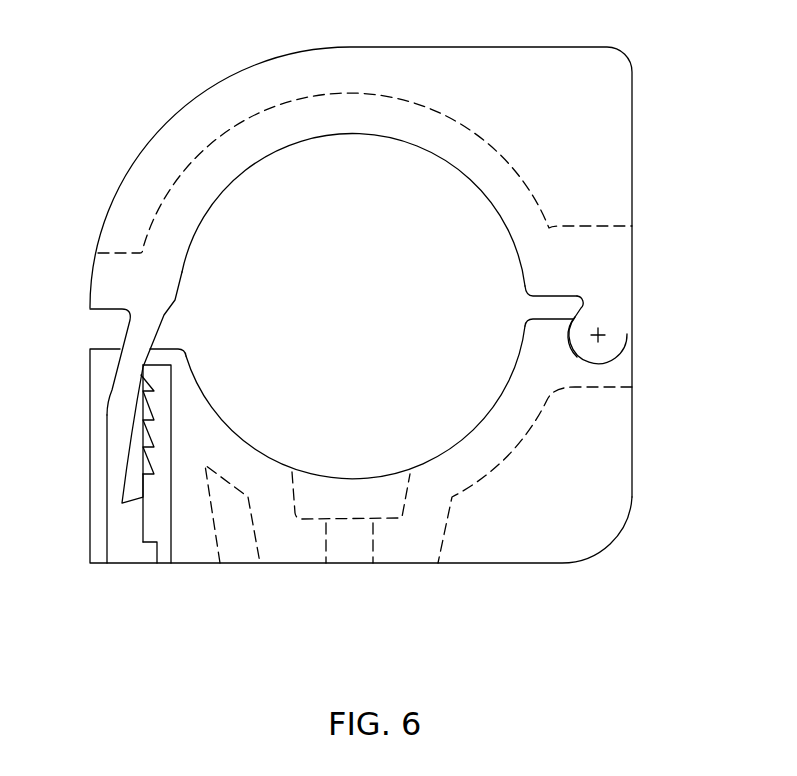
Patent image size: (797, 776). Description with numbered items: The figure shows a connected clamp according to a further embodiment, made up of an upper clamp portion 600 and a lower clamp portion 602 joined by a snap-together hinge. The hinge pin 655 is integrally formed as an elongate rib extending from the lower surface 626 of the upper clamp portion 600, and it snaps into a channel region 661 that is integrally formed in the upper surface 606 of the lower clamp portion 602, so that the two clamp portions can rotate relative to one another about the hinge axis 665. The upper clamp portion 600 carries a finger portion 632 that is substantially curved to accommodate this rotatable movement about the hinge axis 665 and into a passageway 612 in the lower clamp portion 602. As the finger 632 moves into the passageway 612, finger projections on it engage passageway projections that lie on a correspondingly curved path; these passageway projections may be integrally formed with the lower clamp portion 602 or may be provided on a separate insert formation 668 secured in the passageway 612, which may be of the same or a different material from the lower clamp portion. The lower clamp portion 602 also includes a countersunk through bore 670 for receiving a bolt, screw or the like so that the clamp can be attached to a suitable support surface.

The upper clamp portion 600 is at (606, 76).
The lower clamp portion 602 is at (578, 533).
The upper surface 606 is at (527, 317).
The passageway 612 is at (123, 553).
The lower surface 626 is at (560, 290).
The finger portion 632 is at (136, 342).
The hinge pin 655 is at (630, 347).
The channel region 661 is at (570, 343).
The hinge axis 665 is at (604, 334).
The insert formation 668 is at (160, 457).
The countersunk through bore 670 is at (160, 402).